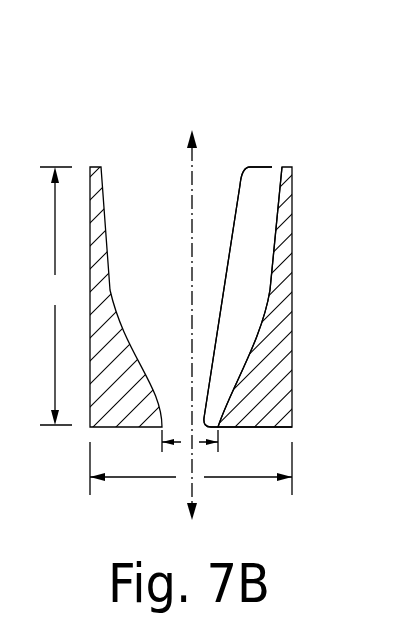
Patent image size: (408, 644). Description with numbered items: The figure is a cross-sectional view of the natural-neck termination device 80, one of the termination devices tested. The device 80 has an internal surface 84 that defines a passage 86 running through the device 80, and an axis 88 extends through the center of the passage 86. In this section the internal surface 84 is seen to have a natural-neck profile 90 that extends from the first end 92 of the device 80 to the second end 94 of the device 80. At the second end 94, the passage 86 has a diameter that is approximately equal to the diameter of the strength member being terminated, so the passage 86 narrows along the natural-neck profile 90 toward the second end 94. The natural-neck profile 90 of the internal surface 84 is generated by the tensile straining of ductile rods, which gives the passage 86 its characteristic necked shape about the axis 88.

The natural-neck termination device 80 is at (249, 80).
The internal surface 84 is at (106, 232).
The passage 86 is at (219, 178).
The axis 88 is at (191, 162).
The natural-neck profile 90 is at (236, 214).
The first end 92 is at (290, 167).
The second end 94 is at (278, 427).